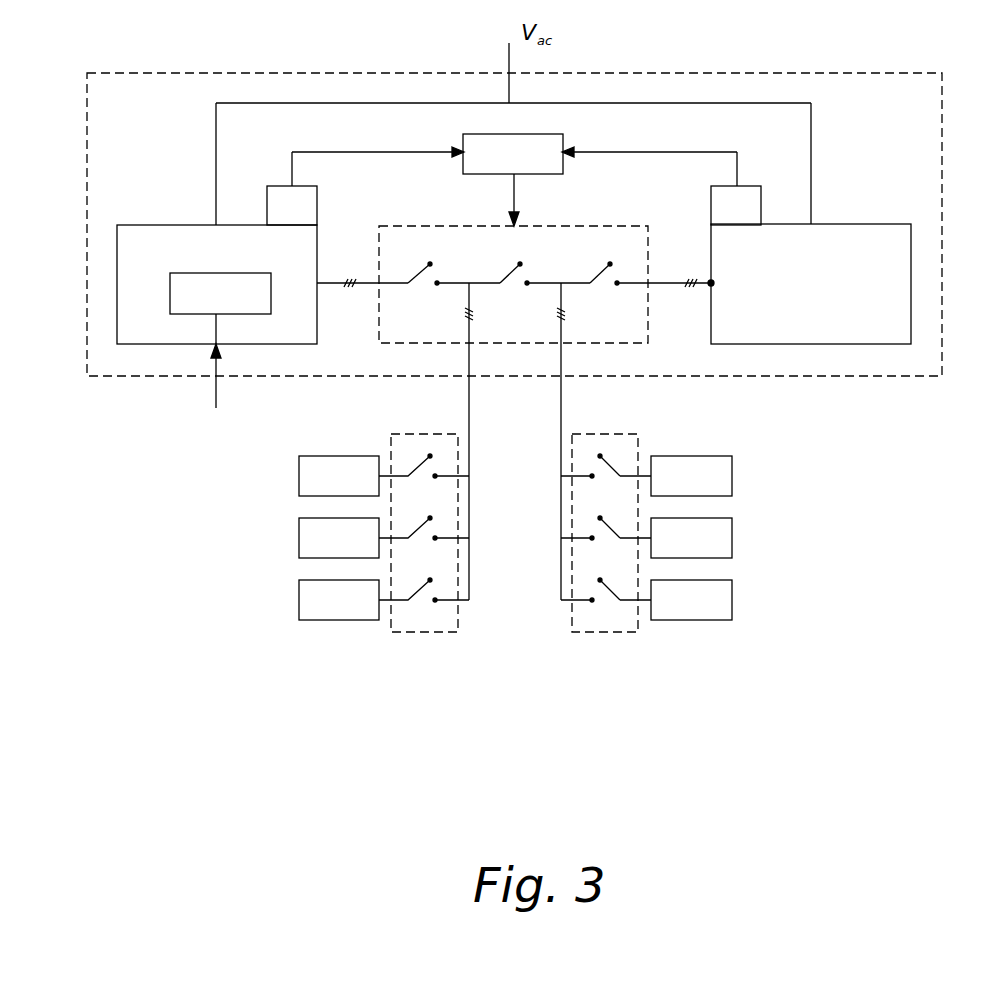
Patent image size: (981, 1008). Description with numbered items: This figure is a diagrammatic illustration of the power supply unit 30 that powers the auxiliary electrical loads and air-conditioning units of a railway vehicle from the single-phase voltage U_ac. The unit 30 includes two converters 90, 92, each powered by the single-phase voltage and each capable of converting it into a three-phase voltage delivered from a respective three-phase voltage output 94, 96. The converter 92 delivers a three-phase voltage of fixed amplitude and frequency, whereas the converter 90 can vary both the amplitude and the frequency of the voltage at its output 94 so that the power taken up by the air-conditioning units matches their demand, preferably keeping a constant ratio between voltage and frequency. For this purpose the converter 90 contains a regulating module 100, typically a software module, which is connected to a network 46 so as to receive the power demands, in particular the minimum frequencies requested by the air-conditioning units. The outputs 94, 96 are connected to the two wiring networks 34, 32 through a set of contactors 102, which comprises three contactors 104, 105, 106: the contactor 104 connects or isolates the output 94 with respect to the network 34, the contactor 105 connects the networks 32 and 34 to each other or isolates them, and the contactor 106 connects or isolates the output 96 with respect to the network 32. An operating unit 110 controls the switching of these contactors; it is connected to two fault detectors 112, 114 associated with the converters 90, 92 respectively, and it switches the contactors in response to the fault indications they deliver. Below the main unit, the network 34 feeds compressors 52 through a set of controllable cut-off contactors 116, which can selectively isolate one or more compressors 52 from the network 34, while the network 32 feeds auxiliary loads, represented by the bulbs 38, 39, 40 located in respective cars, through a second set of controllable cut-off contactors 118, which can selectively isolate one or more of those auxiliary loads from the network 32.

The power supply unit 30 is at (763, 73).
The wiring network 32 is at (561, 395).
The wiring network 34 is at (469, 395).
The bulb 38 is at (691, 476).
The bulb 39 is at (691, 538).
The bulb 40 is at (691, 600).
The network 46 is at (216, 395).
The compressor 52 is at (339, 538).
The converter 90 is at (189, 221).
The converter 92 is at (811, 284).
The three-phase voltage output 94 is at (317, 283).
The three-phase voltage output 96 is at (711, 280).
The regulating module 100 is at (220, 293).
The set of contactors 102 is at (542, 224).
The contactor 104 is at (417, 288).
The contactor 105 is at (507, 288).
The contactor 106 is at (597, 288).
The operating unit 110 is at (513, 154).
The fault detector 112 is at (280, 203).
The fault detector 114 is at (748, 203).
The set of controllable cut-off contactors 116 is at (415, 637).
The set of controllable cut-off contactors 118 is at (593, 635).